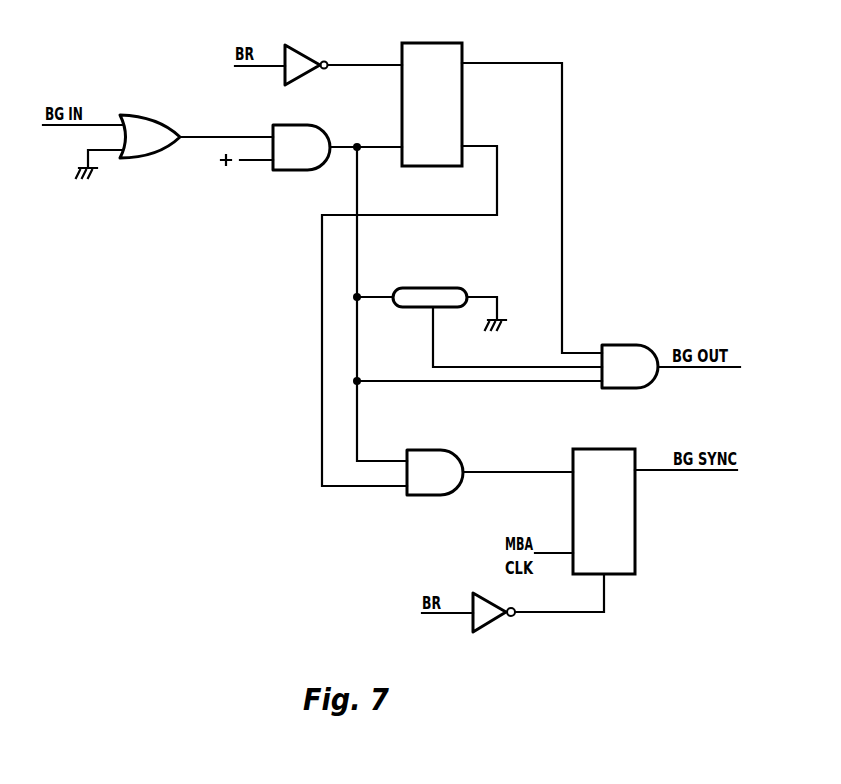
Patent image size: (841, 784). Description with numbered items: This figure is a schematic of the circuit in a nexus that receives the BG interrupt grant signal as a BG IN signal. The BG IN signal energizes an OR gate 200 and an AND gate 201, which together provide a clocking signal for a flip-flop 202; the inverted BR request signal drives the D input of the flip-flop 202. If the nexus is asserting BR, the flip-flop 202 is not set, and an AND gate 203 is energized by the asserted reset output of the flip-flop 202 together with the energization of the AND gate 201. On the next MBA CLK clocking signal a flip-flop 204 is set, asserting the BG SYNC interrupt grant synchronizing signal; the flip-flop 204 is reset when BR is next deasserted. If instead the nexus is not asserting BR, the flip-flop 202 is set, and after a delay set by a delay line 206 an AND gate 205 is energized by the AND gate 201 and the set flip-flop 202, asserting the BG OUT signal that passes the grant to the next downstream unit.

The OR gate 200 is at (158, 100).
The AND gate 201 is at (309, 116).
The flip-flop 202 is at (435, 42).
The AND gate 203 is at (437, 450).
The flip-flop 204 is at (608, 449).
The AND gate 205 is at (633, 345).
The delay line 206 is at (451, 272).